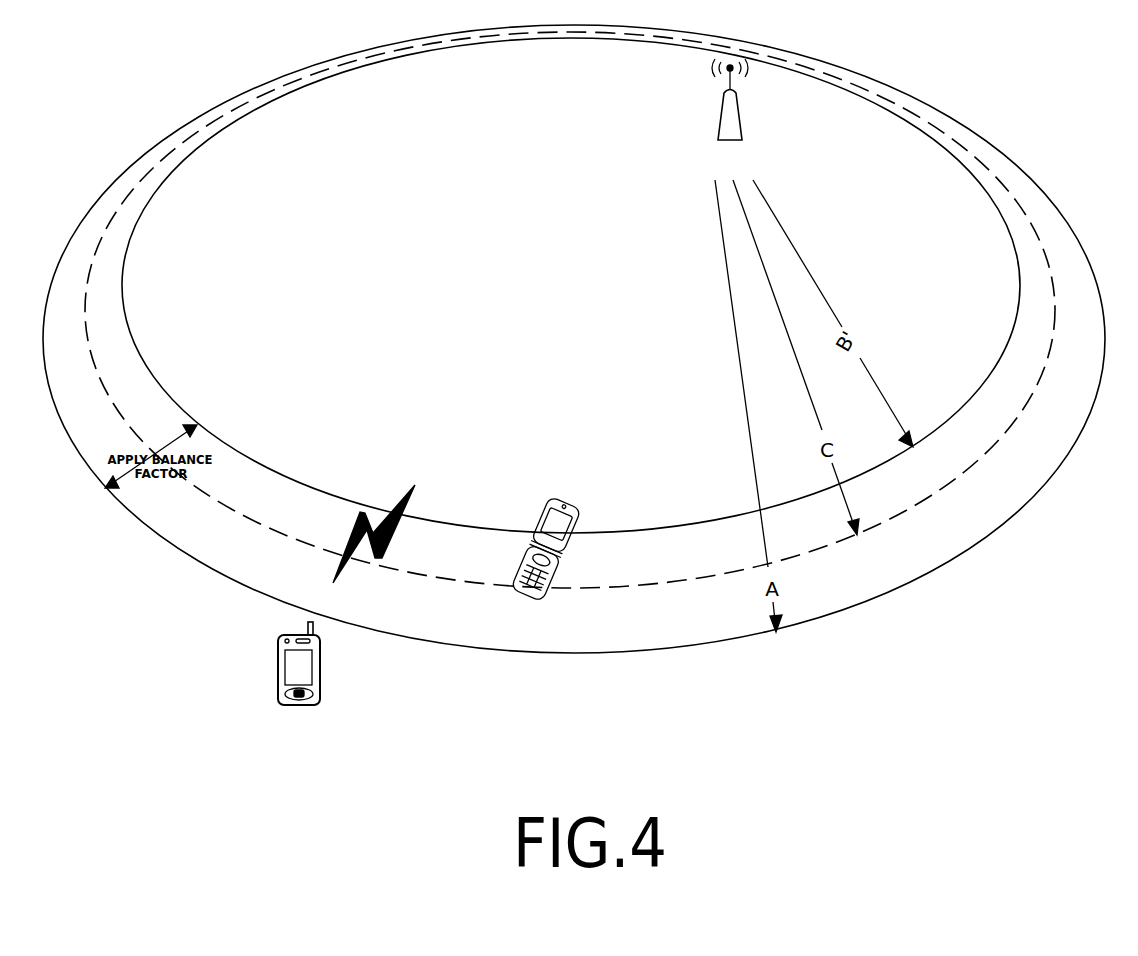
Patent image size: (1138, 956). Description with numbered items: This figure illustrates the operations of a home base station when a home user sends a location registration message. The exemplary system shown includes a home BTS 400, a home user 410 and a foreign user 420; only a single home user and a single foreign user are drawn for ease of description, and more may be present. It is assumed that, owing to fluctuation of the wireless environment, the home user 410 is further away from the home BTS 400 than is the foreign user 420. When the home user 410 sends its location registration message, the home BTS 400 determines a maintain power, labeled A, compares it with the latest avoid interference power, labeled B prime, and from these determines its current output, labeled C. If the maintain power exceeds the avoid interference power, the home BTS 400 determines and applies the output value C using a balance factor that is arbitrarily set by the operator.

The home BTS 400 is at (744, 118).
The home user 410 is at (331, 679).
The foreign user 420 is at (584, 572).